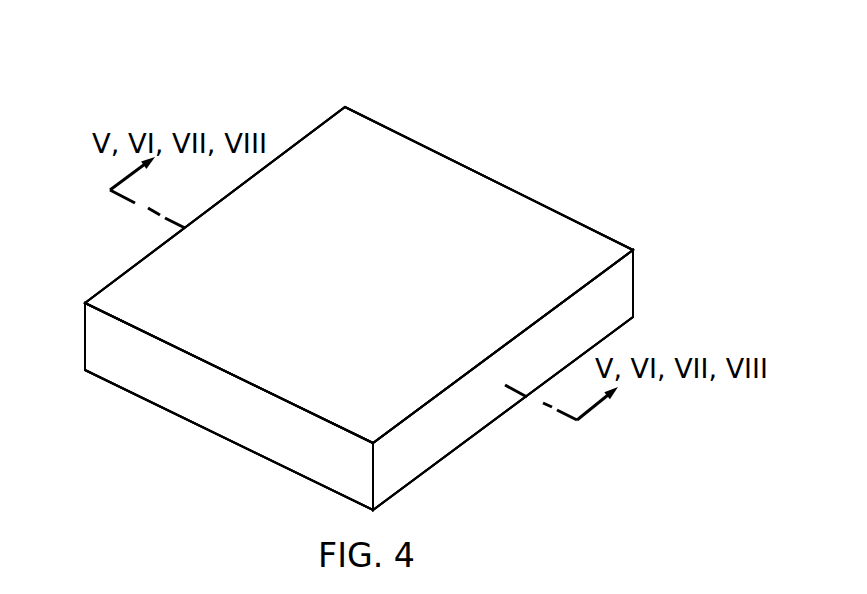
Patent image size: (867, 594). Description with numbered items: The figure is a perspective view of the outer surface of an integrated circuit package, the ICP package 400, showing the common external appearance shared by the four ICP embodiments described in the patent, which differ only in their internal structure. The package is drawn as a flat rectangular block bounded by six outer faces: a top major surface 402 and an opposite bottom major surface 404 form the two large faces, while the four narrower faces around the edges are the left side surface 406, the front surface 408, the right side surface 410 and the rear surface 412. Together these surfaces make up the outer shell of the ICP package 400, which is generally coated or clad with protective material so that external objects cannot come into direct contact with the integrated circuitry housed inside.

The ICP package 400 is at (757, 82).
The top major surface 402 is at (474, 207).
The bottom major surface 404 is at (184, 504).
The left side surface 406 is at (118, 352).
The front surface 408 is at (435, 437).
The right side surface 410 is at (560, 213).
The rear surface 412 is at (141, 260).